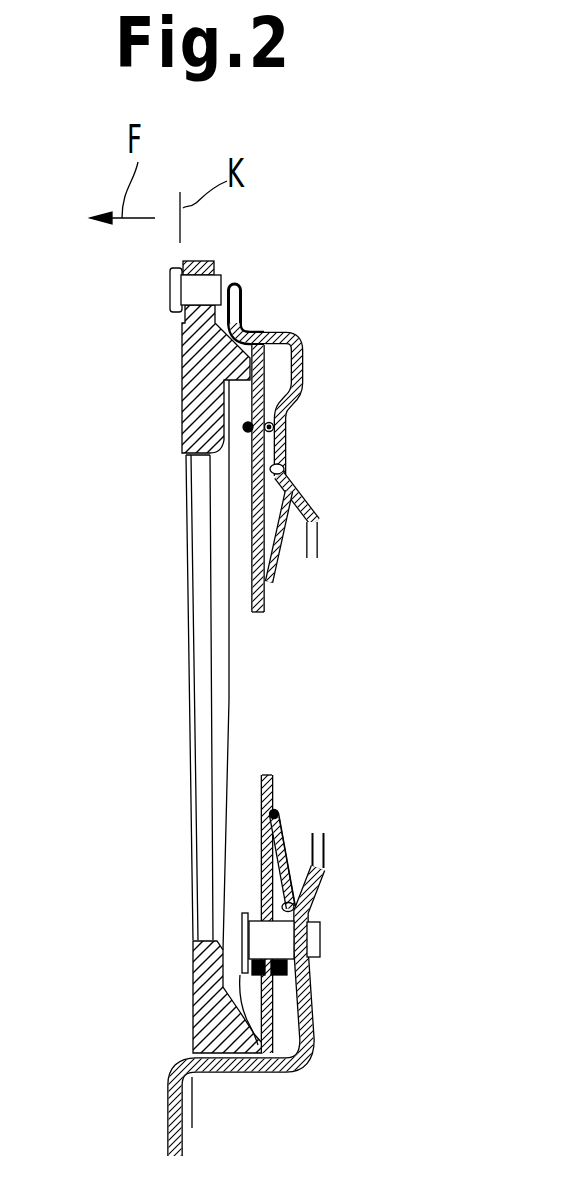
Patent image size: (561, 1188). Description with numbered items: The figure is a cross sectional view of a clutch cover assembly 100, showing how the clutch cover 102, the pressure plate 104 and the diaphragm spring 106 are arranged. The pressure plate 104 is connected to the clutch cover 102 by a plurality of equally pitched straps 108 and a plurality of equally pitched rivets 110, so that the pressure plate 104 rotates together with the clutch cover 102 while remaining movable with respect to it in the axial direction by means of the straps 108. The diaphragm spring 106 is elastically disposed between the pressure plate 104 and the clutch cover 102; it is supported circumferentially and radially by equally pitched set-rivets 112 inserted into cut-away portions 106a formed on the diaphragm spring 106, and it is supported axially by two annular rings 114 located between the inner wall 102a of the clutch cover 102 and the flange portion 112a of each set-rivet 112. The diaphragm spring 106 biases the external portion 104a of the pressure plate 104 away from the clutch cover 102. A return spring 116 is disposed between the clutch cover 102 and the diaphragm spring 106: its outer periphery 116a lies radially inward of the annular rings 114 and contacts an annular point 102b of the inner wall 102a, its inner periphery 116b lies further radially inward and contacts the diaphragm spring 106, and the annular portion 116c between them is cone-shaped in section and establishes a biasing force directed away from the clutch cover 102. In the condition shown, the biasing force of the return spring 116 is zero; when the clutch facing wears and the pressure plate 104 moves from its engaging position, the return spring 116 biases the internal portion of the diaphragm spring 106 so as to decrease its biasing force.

The fastening device assembly 100 is at (427, 274).
The clutch cover 102 is at (300, 362).
The inner wall 102a is at (284, 469).
The annular point 102b is at (292, 910).
The pressure plate 104 is at (183, 373).
The external portion 104a is at (278, 332).
The diaphragm spring 106 is at (260, 398).
The cut-away portions 106a is at (261, 904).
The straps 108 is at (190, 260).
The rivets 110 is at (207, 289).
The set-rivets 112 is at (290, 947).
The flange portion 112a is at (243, 973).
The annular rings 114 is at (274, 428).
The return spring 116 is at (306, 501).
The outer periphery 116a is at (289, 492).
The inner periphery 116b is at (276, 813).
The annular portion 116c is at (288, 850).